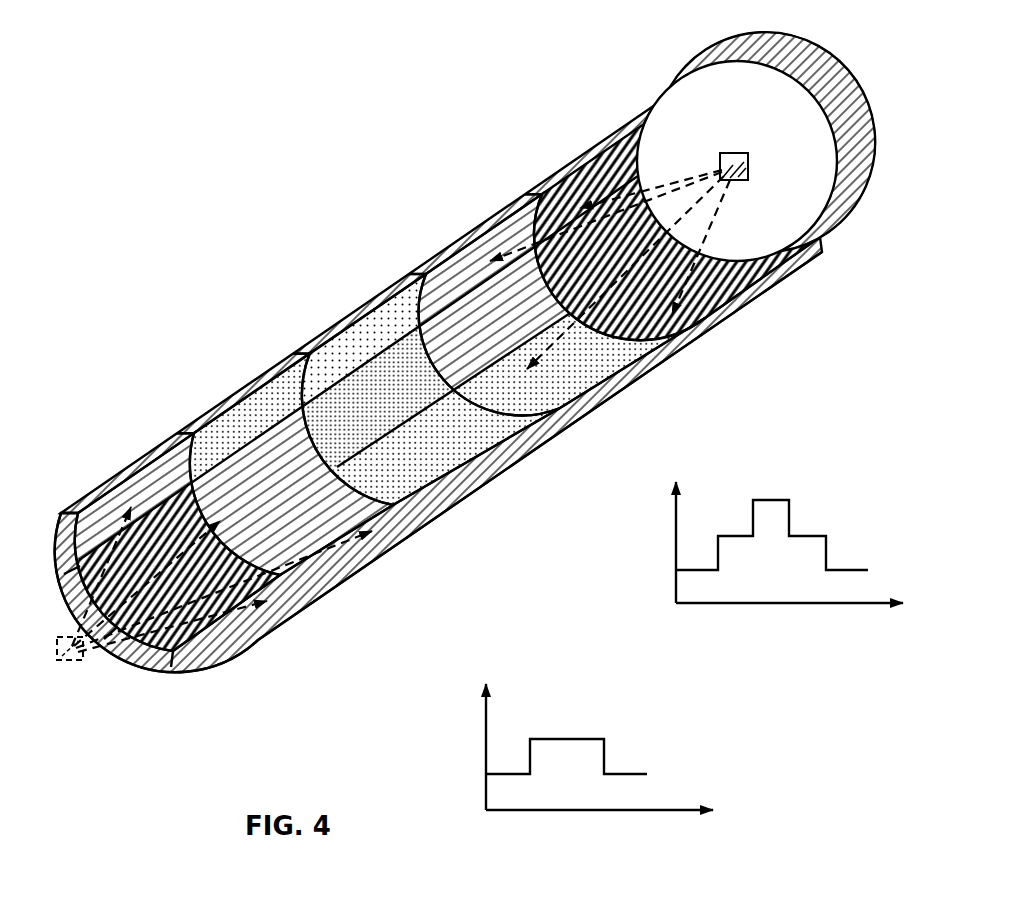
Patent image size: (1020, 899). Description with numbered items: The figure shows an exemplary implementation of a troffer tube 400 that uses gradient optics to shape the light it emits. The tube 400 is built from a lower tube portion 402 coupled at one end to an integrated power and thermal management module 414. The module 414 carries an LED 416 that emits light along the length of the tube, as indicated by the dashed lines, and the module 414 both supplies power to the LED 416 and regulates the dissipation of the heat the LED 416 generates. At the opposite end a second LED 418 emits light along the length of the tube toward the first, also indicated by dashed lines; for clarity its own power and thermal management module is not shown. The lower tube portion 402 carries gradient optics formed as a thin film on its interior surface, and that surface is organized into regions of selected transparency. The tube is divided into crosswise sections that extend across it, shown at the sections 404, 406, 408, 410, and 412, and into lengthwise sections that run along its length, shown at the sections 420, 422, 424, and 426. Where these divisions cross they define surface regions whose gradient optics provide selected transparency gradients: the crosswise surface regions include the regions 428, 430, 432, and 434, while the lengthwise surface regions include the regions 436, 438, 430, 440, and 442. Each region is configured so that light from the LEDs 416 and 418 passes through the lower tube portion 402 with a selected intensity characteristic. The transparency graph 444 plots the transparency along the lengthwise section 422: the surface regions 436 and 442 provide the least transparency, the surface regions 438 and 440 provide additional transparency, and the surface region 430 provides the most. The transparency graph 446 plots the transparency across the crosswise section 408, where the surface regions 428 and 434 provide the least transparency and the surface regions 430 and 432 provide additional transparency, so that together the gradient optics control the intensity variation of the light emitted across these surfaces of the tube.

The tube 400 is at (176, 100).
The lower tube portion 402 is at (462, 526).
The crosswise section 404 is at (124, 477).
The crosswise section 406 is at (236, 396).
The crosswise section 408 is at (350, 318).
The crosswise section 410 is at (465, 238).
The crosswise section 412 is at (578, 160).
The integrated power and thermal management module 414 is at (715, 95).
The LED 416 is at (742, 151).
The LED 418 is at (66, 662).
The lengthwise section 420 is at (70, 538).
The lengthwise section 422 is at (79, 588).
The lengthwise section 424 is at (139, 656).
The lengthwise section 426 is at (232, 645).
The crosswise surface region 428 is at (0, 4).
The surface region 430 is at (0, 4).
The crosswise surface region 432 is at (0, 4).
The crosswise surface region 434 is at (0, 4).
The lengthwise surface region 436 is at (0, 4).
The lengthwise surface region 438 is at (0, 4).
The lengthwise surface region 440 is at (0, 4).
The lengthwise surface region 442 is at (0, 4).
The transparency graph 444 is at (832, 462).
The transparency graph 446 is at (707, 692).